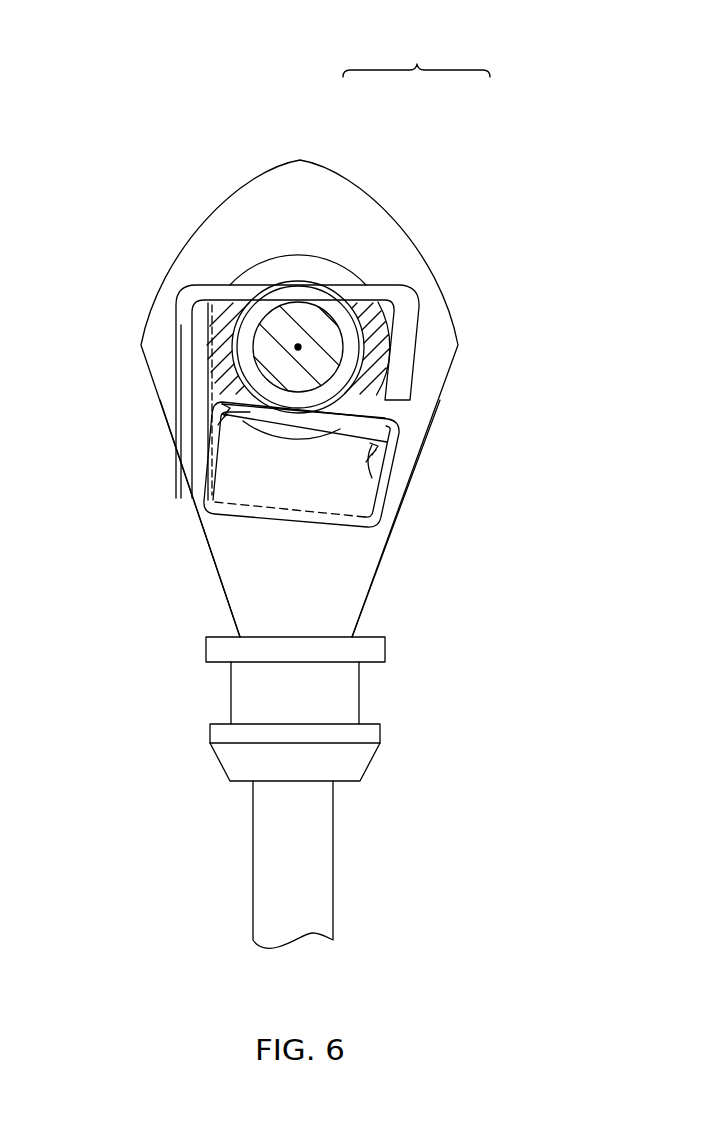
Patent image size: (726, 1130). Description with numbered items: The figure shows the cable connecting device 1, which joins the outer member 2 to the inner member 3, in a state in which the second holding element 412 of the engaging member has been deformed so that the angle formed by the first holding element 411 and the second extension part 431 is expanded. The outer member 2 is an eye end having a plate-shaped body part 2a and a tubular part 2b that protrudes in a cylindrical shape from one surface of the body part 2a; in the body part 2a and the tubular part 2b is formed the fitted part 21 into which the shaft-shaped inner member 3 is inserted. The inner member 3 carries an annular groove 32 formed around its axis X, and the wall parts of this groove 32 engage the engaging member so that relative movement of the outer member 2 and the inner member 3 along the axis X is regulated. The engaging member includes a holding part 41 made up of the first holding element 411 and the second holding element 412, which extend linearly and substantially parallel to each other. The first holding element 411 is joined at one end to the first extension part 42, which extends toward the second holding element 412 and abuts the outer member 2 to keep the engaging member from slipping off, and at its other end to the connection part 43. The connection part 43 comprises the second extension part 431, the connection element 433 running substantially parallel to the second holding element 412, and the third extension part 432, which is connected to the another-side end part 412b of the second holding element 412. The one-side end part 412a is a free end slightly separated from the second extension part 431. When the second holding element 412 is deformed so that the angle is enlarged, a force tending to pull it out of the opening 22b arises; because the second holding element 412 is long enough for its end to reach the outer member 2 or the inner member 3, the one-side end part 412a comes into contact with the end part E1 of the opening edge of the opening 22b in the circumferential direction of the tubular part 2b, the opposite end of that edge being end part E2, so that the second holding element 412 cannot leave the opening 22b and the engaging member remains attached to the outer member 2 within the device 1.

The light emitting device 1 is at (568, 99).
The outer member 2 is at (180, 332).
The body part 2a is at (340, 557).
The tubular part 2b is at (218, 358).
The fitted part 21 is at (193, 345).
The opening 22b is at (293, 428).
The inner member 3 is at (268, 300).
The groove 32 is at (205, 312).
The holding part 41 is at (416, 52).
The first holding element 411 is at (343, 300).
The second holding element 412 is at (365, 312).
The one-side end part 412a is at (205, 445).
The another-side end part 412b is at (382, 500).
The first extension part 42 is at (407, 353).
The connection part 43 is at (70, 522).
The second extension part 431 is at (197, 463).
The third extension part 432 is at (378, 500).
The connection element 433 is at (285, 520).
The end part E1 is at (222, 404).
The end part E2 is at (400, 412).
The axis X is at (298, 345).